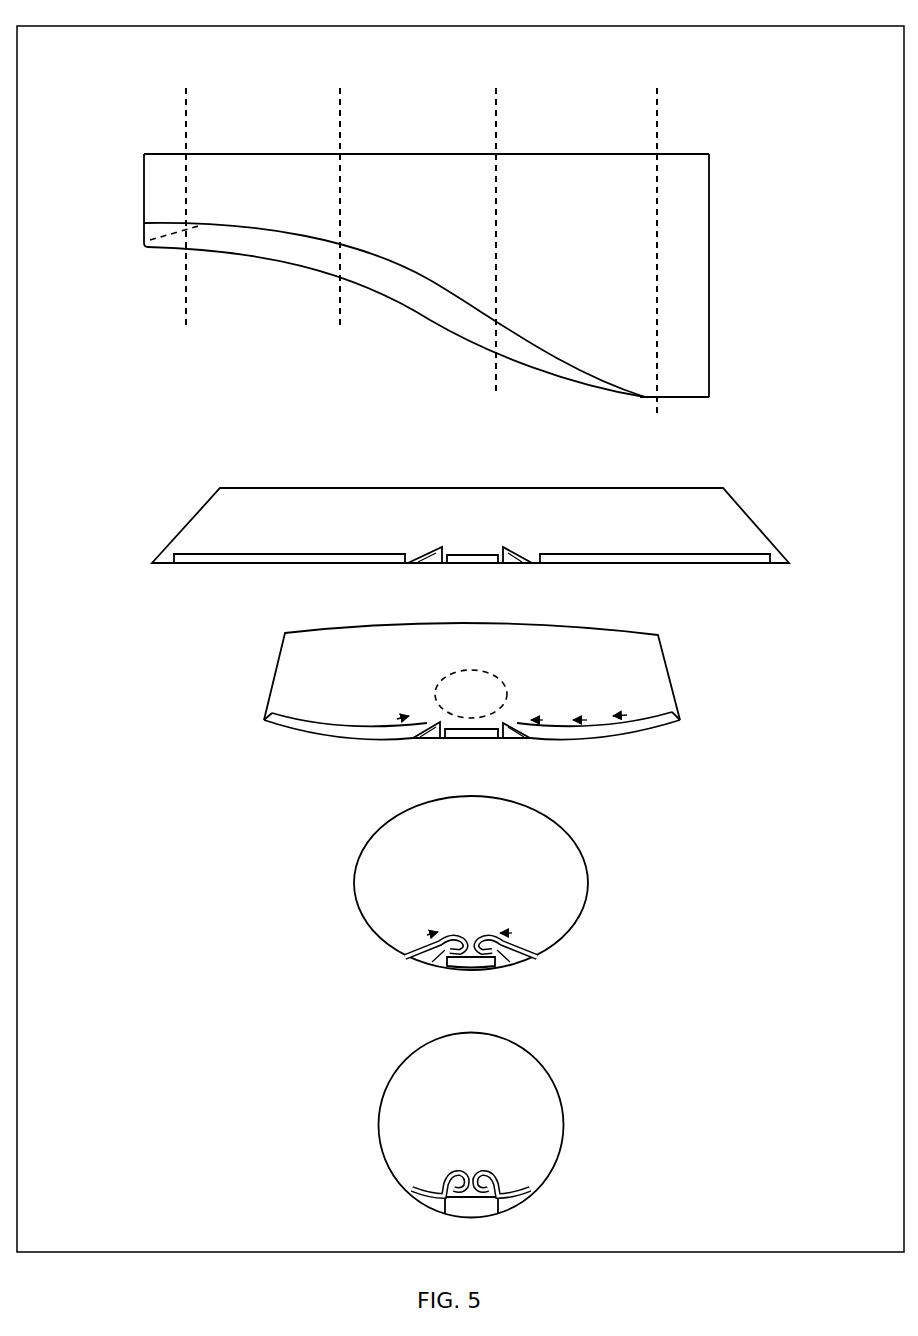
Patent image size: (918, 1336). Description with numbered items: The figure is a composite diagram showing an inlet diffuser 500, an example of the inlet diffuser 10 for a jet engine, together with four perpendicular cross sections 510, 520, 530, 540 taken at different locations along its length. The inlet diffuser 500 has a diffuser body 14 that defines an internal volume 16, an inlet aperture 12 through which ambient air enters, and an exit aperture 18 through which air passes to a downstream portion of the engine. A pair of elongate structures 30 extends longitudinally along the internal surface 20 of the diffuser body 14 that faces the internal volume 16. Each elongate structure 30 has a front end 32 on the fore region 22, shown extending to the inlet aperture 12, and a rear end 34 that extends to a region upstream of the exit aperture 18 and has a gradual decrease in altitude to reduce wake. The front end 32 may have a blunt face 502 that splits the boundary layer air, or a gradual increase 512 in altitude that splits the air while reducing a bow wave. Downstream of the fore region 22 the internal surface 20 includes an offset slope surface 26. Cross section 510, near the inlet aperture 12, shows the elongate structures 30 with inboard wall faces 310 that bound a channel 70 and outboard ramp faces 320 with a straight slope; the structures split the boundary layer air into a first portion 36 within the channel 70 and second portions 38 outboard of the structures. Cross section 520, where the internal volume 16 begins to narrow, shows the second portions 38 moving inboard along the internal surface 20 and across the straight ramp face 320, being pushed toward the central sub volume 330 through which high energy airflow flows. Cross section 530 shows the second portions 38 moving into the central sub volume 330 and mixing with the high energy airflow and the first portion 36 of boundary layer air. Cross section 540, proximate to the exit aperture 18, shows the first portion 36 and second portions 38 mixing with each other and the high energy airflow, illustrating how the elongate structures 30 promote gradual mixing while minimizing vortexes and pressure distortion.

The inlet diffuser 10 is at (150, 140).
The inlet aperture 12 is at (144, 180).
The diffuser body 14 is at (568, 175).
The internal volume 16 is at (425, 177).
The exit aperture 18 is at (710, 230).
The internal surface 20 is at (428, 307).
The fore region 22 is at (205, 243).
The offset slope surface 26 is at (680, 395).
The elongate structures 30 is at (517, 337).
The front end 32 is at (165, 243).
The rear end 34 is at (575, 368).
The first portion of boundary layer air 36 is at (477, 553).
The second portions of boundary layer air 38 is at (600, 553).
The channel 70 is at (498, 727).
The inboard wall faces 310 is at (443, 547).
The outboard ramp faces 320 is at (517, 560).
The central sub volume 330 is at (462, 682).
The inlet diffuser 500 is at (106, 68).
The blunt face 502 is at (143, 240).
The cross section 510 is at (188, 76).
The gradual increase in altitude 512 is at (177, 232).
The cross section 520 is at (342, 76).
The cross section 530 is at (497, 76).
The cross section 540 is at (658, 76).